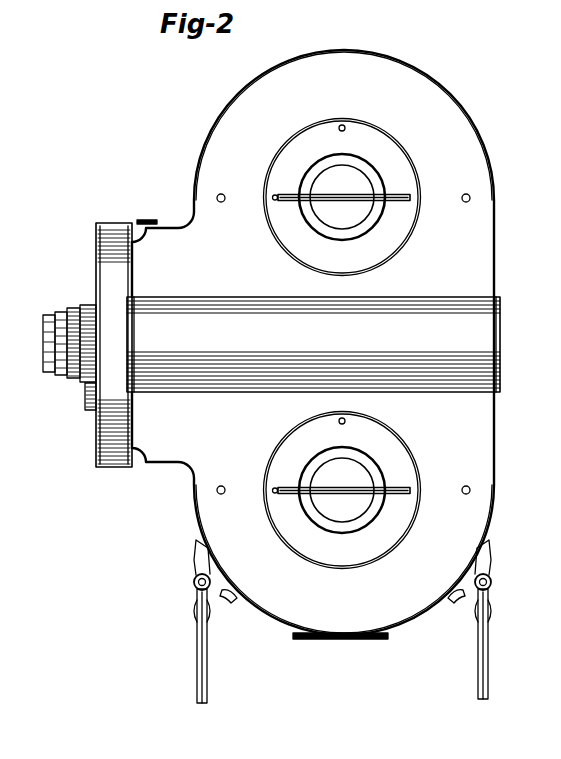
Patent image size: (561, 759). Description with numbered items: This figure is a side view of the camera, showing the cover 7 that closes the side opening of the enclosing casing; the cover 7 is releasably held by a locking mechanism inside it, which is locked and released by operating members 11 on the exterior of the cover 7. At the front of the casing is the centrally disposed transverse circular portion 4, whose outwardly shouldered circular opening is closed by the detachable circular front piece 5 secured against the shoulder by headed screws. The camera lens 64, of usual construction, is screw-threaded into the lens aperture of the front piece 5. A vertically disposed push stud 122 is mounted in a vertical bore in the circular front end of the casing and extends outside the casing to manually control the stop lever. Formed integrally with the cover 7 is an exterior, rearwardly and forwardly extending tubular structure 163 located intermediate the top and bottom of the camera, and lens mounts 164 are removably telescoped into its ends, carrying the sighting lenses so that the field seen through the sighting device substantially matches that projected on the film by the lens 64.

The cover 7 is at (232, 114).
The operating members 11 is at (396, 198).
The transverse circular portion 4 is at (110, 228).
The push stud 122 is at (147, 221).
The tubular structure 163 is at (478, 303).
The lens mounts 164 is at (125, 317).
The lens 64 is at (60, 316).
The front piece 5 is at (88, 412).